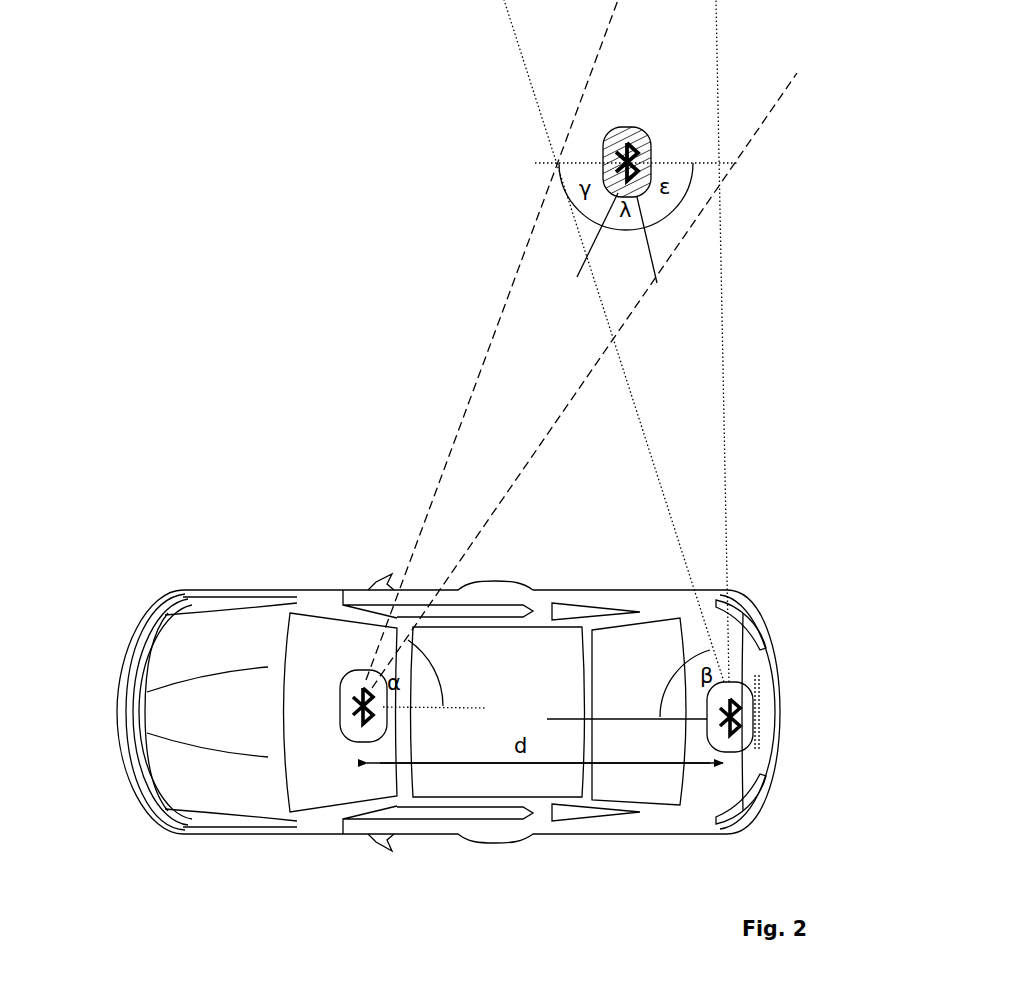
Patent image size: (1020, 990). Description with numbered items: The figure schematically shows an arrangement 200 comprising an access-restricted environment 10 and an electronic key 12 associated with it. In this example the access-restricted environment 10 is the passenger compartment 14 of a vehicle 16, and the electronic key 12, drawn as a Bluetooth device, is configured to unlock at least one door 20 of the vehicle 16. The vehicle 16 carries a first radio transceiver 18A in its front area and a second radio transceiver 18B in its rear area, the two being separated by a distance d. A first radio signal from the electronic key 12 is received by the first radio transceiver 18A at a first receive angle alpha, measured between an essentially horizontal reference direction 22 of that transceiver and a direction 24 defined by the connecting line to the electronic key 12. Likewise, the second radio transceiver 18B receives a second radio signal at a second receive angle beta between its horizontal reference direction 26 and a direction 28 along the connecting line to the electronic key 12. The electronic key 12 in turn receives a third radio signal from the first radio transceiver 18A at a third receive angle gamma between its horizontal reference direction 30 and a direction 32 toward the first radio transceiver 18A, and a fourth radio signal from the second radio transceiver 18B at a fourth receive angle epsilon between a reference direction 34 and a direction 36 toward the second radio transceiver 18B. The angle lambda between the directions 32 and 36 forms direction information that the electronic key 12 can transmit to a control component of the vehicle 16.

The arrangement 200 is at (291, 70).
The access-restricted environment 10 is at (299, 553).
The electronic key 12 is at (627, 125).
The passenger compartment 14 is at (656, 634).
The vehicle 16 is at (126, 648).
The first radio transceiver 18A is at (356, 742).
The second radio transceiver 18B is at (733, 752).
The door 20 is at (388, 580).
The direction 22 is at (442, 707).
The direction 24 is at (405, 600).
The direction 26 is at (657, 722).
The direction 28 is at (761, 618).
The direction 30 is at (587, 163).
The direction 32 is at (590, 245).
The direction 34 is at (703, 163).
The direction 36 is at (647, 240).